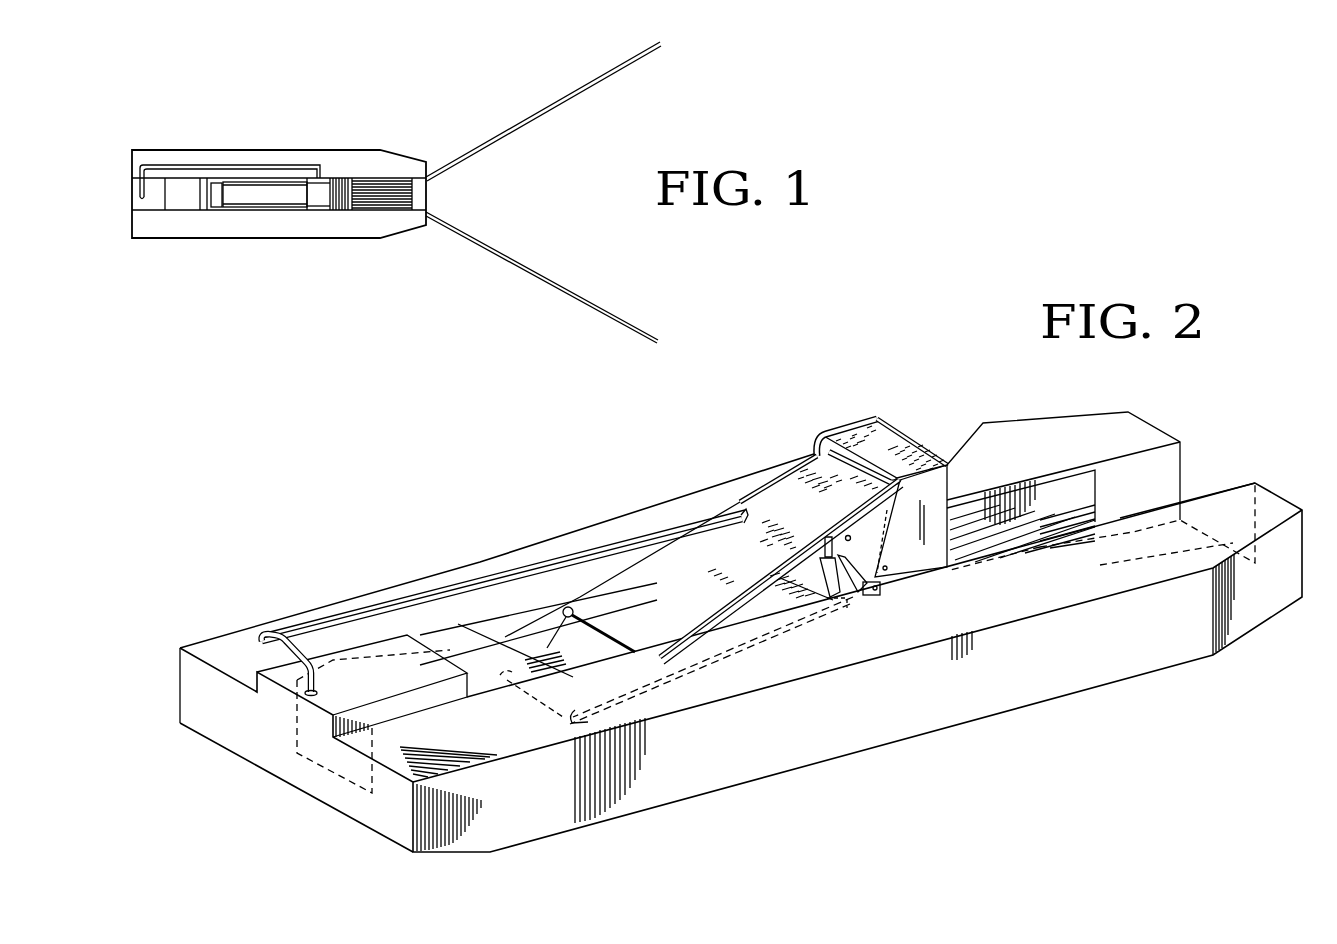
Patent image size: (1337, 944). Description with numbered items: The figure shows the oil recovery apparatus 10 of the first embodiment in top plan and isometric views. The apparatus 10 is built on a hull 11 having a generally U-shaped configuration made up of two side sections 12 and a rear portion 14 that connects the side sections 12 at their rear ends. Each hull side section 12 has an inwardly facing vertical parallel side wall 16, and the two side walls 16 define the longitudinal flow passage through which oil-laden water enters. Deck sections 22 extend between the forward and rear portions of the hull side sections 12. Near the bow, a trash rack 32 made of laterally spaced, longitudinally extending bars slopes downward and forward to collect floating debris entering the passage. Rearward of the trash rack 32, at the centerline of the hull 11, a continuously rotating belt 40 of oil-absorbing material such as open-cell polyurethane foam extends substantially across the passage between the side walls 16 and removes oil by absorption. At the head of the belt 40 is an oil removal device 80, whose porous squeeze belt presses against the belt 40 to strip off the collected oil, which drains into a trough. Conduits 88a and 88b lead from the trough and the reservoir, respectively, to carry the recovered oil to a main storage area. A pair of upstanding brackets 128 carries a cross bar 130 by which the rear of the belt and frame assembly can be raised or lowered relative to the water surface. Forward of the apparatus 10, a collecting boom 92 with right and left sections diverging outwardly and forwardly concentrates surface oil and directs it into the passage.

In FIG. 1, the oil recovery apparatus 10 is at (363, 130).
In FIG. 2, the oil recovery apparatus 10 is at (579, 507).
In FIG. 1, the hull 11 is at (375, 232).
In FIG. 2, the hull 11 is at (493, 556).
In FIG. 1, the hull side section 12 is at (283, 230).
In FIG. 2, the hull side section 12 is at (711, 507).
In FIG. 2, the rear portion 14 is at (375, 757).
In FIG. 2, the side wall 16 is at (536, 630).
In FIG. 2, the deck section 22 is at (956, 505).
In FIG. 1, the trash rack 32 is at (413, 192).
In FIG. 2, the trash rack 32 is at (1050, 520).
In FIG. 1, the belt 40 is at (240, 200).
In FIG. 2, the belt 40 is at (768, 508).
In FIG. 2, the oil removal device 80 is at (886, 410).
In FIG. 2, the conduit 88a is at (663, 530).
In FIG. 2, the conduit 88b is at (410, 615).
In FIG. 1, the collecting boom 92 is at (602, 80).
In FIG. 2, the upstanding brackets 128 is at (590, 597).
In FIG. 2, the cross bar 130 is at (618, 642).